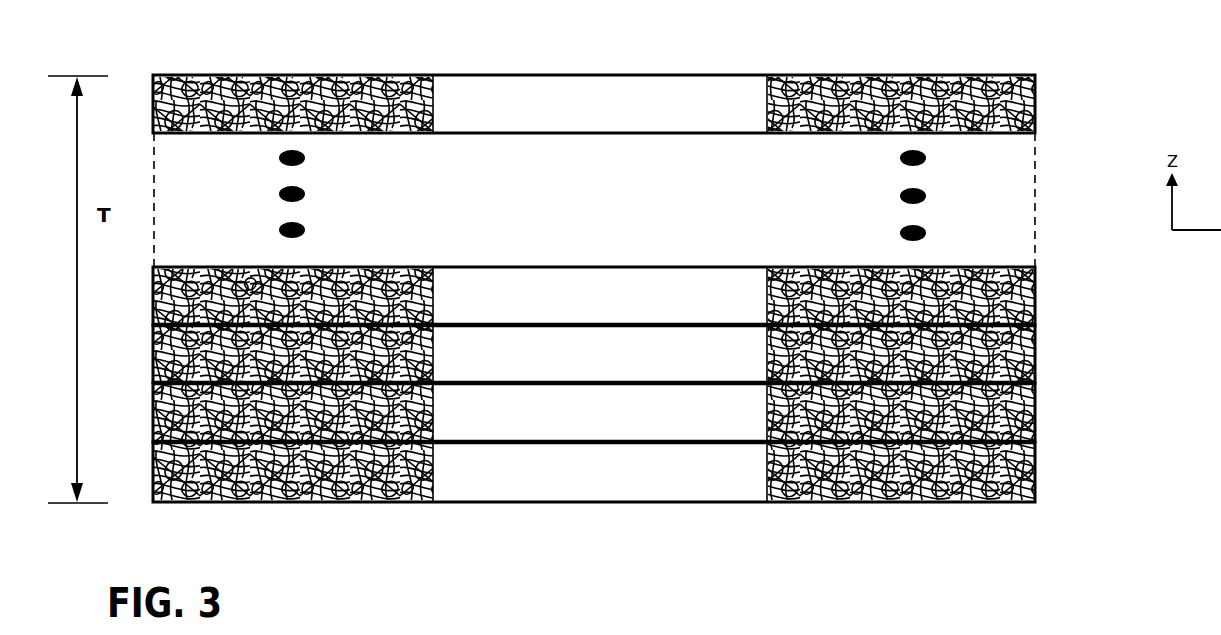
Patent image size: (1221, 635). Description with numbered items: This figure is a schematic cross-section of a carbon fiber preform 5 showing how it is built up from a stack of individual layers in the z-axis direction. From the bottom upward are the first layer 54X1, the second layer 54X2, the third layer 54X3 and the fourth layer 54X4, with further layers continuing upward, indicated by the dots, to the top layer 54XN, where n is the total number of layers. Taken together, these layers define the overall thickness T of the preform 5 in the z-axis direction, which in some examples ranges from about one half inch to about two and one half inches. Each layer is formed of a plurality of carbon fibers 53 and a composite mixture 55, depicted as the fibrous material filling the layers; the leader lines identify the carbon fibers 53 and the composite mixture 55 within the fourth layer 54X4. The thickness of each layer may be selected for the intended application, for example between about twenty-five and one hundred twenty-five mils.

The multilayer nonwoven article 5 is at (687, 321).
The carbon fibers 53 is at (343, 266).
The composite mixture 55 is at (257, 290).
The individual layer 54XN is at (1035, 122).
The individual layer 54X4 is at (636, 410).
The individual layer 54X3 is at (1035, 375).
The individual layer 54X2 is at (1035, 433).
The individual layer 54X1 is at (1035, 490).